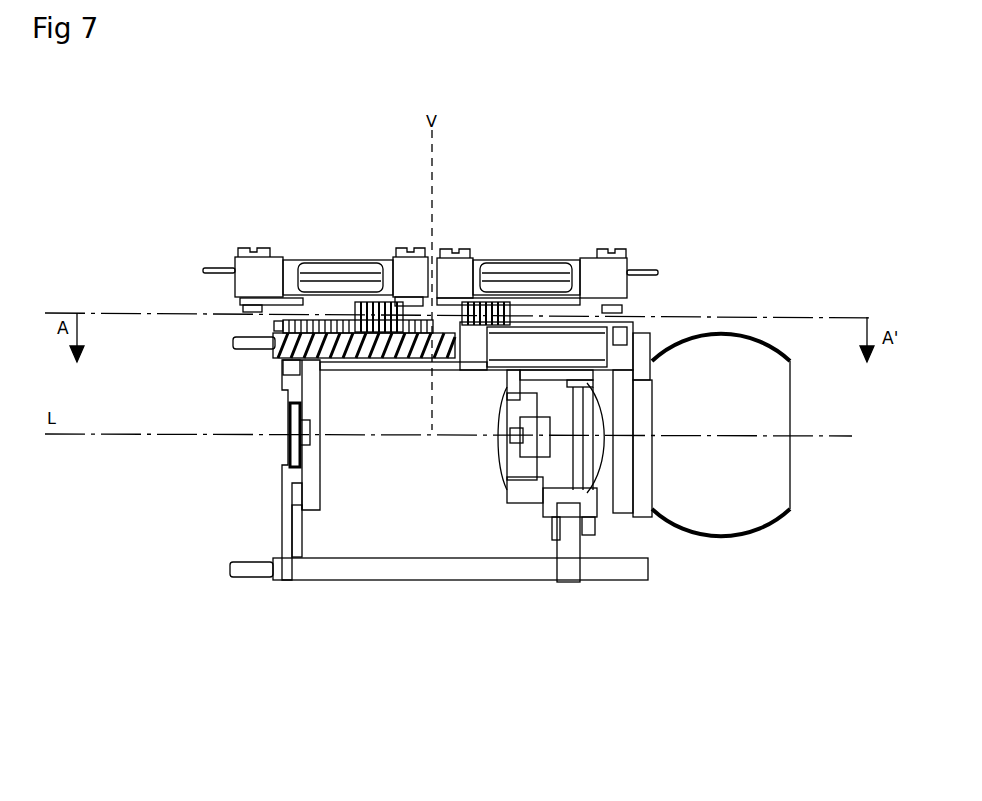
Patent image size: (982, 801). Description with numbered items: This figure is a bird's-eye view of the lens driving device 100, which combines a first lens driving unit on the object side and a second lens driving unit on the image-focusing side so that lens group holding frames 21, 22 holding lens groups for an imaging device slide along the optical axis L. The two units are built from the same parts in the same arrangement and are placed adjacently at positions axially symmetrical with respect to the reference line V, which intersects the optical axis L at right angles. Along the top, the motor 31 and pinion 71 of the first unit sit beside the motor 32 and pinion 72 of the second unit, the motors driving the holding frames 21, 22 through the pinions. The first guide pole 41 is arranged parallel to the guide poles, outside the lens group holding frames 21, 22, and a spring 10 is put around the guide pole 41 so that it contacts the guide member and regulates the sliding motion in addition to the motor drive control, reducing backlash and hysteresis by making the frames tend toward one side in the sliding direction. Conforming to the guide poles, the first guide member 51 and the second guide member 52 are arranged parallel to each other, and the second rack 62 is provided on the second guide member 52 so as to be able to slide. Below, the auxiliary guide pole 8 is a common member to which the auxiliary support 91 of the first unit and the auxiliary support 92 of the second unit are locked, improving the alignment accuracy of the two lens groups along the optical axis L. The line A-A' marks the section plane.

The lens driving device 100 is at (122, 97).
The second rack 62 is at (280, 325).
The motor 32 is at (315, 262).
The pinion 72 is at (360, 300).
The pinion 71 is at (502, 302).
The motor 31 is at (560, 262).
The first guide member 51 is at (627, 357).
The first guide pole 41 is at (238, 345).
The spring 10 is at (283, 358).
The lens group holding frame 22 is at (282, 488).
The second guide member 52 is at (403, 368).
The auxiliary guide pole 8 is at (487, 572).
The auxiliary support 92 is at (287, 570).
The auxiliary support 91 is at (568, 578).
The lens group holding frame 21 is at (597, 497).